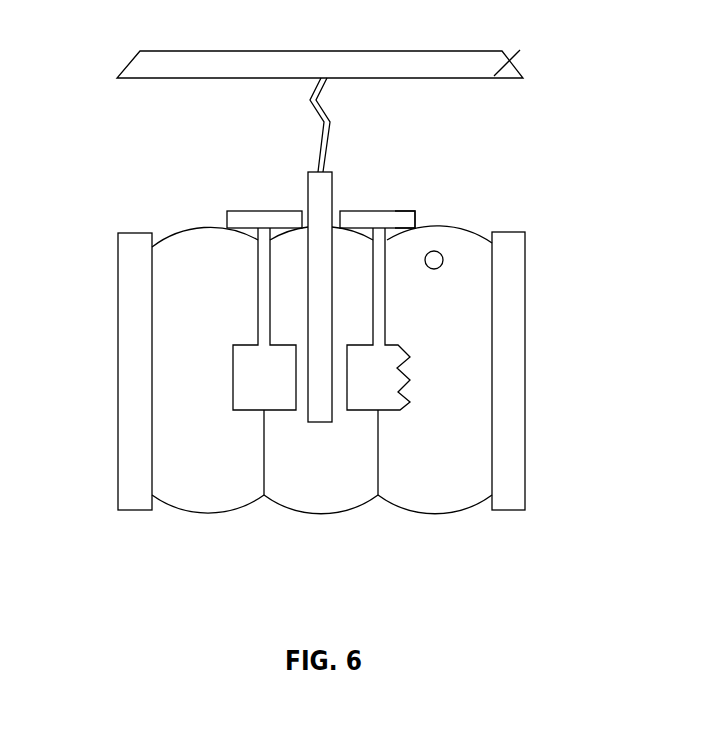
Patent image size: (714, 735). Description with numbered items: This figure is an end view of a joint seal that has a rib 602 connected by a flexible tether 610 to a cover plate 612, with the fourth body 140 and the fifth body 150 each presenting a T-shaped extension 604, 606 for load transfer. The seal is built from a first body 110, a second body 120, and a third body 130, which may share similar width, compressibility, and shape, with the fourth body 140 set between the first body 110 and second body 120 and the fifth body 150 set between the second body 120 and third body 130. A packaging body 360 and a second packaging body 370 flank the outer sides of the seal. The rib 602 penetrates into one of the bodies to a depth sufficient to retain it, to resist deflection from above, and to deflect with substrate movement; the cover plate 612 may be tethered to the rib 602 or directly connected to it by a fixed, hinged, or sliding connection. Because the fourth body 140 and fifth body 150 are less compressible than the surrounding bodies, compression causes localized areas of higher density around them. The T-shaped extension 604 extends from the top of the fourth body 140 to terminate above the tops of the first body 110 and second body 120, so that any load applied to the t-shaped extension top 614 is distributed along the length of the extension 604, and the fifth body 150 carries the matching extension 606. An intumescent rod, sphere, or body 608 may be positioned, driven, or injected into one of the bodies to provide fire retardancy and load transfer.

The cover plate 612 is at (513, 41).
The flexible tether 610 is at (330, 120).
The rib 602 is at (312, 170).
The T-shaped extension 604 is at (242, 220).
The fourth body 140 is at (267, 220).
The fifth body 150 is at (378, 220).
The t-shaped extension top 614 is at (395, 220).
The T-shaped extension 606 is at (403, 223).
The intumescent body 608 is at (444, 259).
The packaging body 360 is at (130, 266).
The second packaging body 370 is at (510, 265).
The first body 110 is at (215, 502).
The second body 120 is at (330, 502).
The third body 130 is at (443, 502).